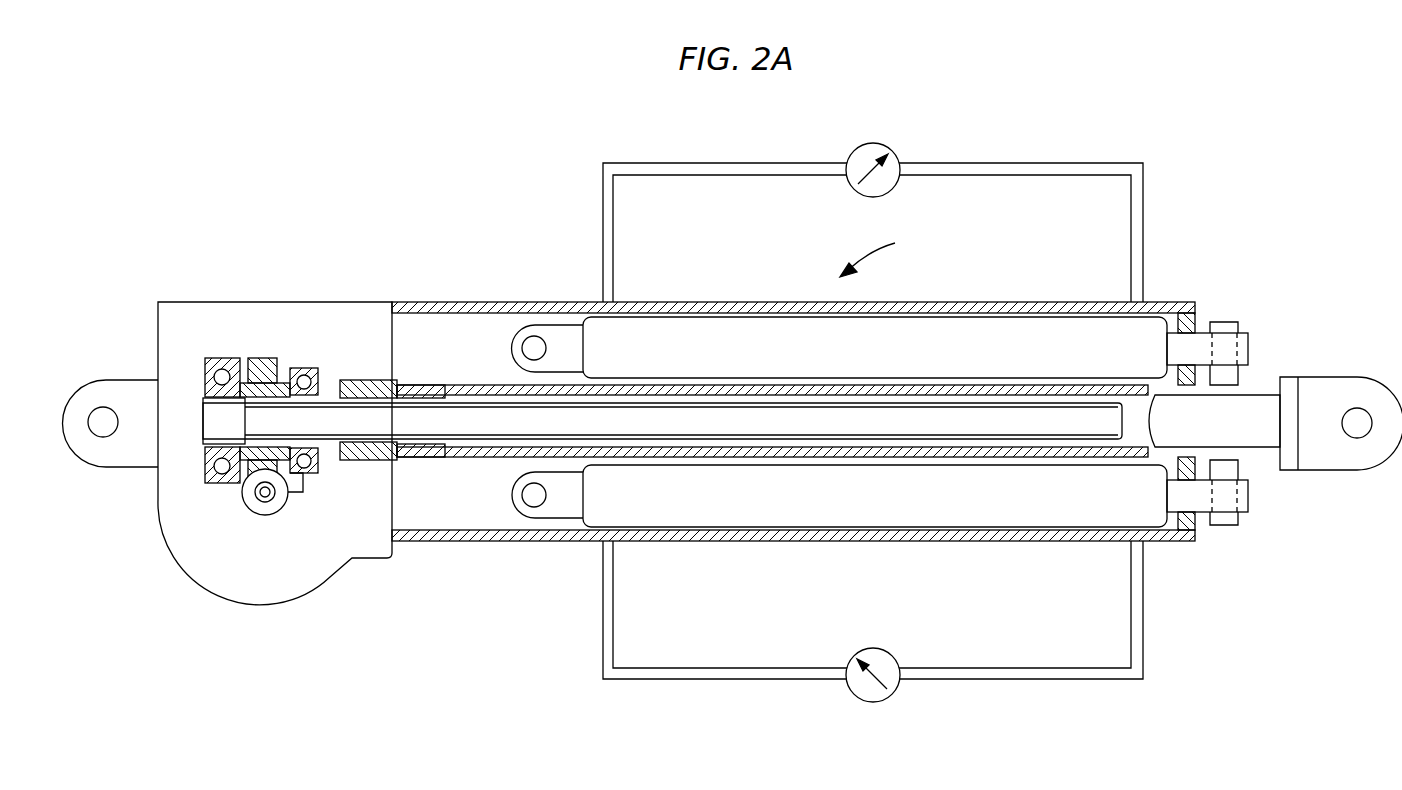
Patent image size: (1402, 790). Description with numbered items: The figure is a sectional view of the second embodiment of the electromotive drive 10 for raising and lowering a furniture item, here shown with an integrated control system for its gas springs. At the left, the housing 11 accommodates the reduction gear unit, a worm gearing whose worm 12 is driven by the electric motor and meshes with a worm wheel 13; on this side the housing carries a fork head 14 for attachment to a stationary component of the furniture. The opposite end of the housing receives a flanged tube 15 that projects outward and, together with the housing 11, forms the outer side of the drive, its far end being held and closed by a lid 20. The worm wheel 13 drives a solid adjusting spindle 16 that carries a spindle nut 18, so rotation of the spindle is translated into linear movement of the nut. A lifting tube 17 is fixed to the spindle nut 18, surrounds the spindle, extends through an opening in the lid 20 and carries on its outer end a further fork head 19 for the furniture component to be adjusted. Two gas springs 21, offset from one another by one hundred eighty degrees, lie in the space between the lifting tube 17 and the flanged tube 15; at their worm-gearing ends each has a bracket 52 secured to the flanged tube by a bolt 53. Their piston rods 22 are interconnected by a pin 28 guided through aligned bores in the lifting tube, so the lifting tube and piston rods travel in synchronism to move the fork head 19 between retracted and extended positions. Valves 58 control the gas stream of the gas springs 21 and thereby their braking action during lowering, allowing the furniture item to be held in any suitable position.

The electromotive drive 10 is at (883, 254).
The housing 11 is at (307, 317).
The worm 12 is at (268, 500).
The worm wheel 13 is at (248, 358).
The fork head 14 is at (112, 388).
The flanged tube 15 is at (1000, 304).
The adjusting spindle 16 is at (857, 425).
The lifting tube 17 is at (1073, 386).
The spindle nut 18 is at (372, 388).
The fork head 19 is at (1335, 388).
The lid 20 is at (1198, 305).
The gas springs 21 is at (693, 330).
The piston rods 22 is at (1250, 351).
The pin 28 is at (1232, 470).
The bracket 52 is at (565, 338).
The bolt 53 is at (533, 500).
The valves 58 is at (887, 145).